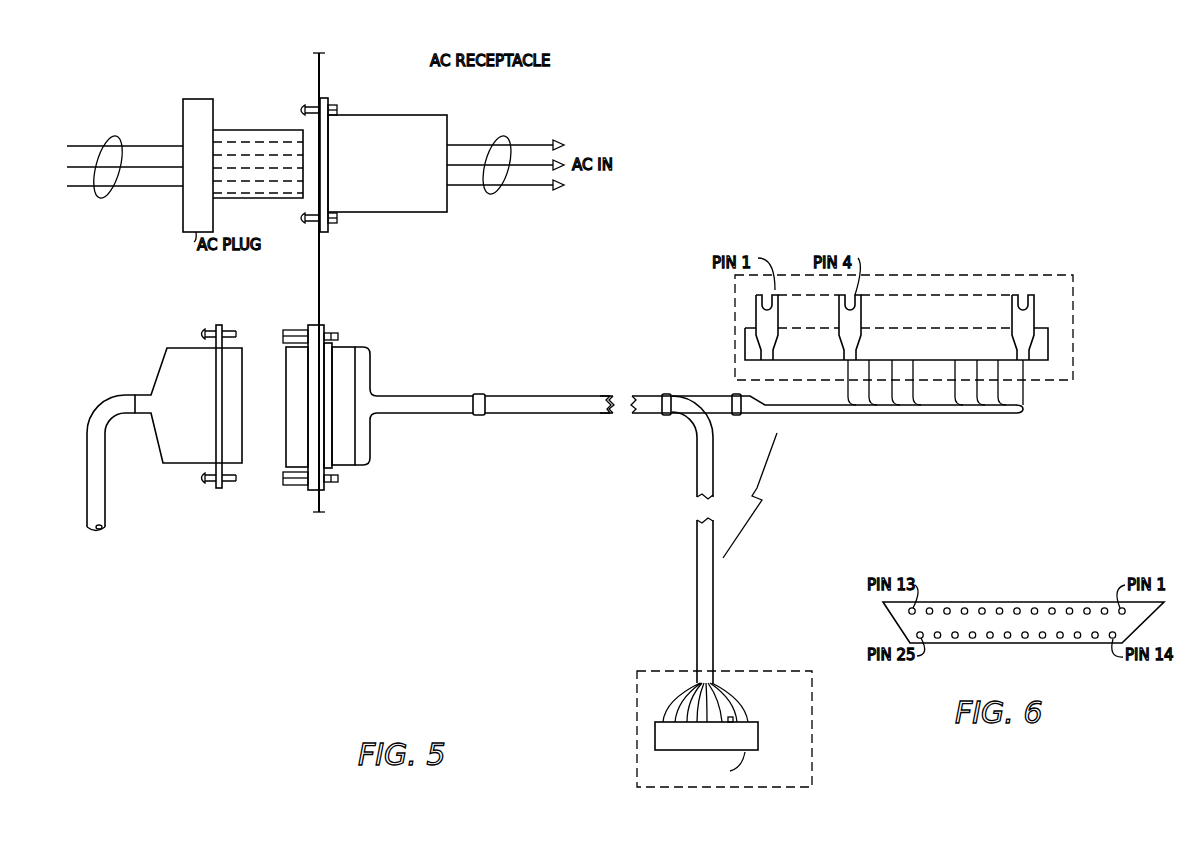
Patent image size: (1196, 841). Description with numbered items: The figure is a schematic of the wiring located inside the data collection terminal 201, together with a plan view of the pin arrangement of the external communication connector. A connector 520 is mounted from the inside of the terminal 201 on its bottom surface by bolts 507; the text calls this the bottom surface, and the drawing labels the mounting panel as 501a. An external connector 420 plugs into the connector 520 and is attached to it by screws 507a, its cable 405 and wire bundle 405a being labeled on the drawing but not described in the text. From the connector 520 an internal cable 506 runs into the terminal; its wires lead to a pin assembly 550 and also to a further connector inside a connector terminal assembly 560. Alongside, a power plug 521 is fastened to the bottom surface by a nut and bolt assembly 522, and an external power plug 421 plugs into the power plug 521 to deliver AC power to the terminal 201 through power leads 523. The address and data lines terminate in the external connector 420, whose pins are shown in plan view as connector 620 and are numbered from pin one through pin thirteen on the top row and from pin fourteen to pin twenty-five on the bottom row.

In FIG. 5, the AC power cord wires 405a is at (116, 136).
In FIG. 5, the power plug 421 is at (197, 99).
In FIG. 5, the nut and bolt assembly 522 is at (330, 103).
In FIG. 5, the power plug 521 is at (375, 115).
In FIG. 5, the power leads 523 is at (495, 195).
In FIG. 5, the panel 501a is at (319, 252).
In FIG. 5, the external connector P1 420 is at (153, 435).
In FIG. 5, the cable 405 is at (106, 490).
In FIG. 5, the screws 507a is at (200, 333).
In FIG. 5, the connector J1 520 is at (363, 348).
In FIG. 5, the bolts 507 is at (294, 312).
In FIG. 5, the internal cable 506 is at (562, 413).
In FIG. 5, the data collection terminal 201 is at (552, 345).
In FIG. 5, the pin assembly 550 is at (993, 275).
In FIG. 5, the connector terminal assembly 560 is at (781, 672).
In FIG. 6, the 25-pin connector 620 is at (1040, 602).